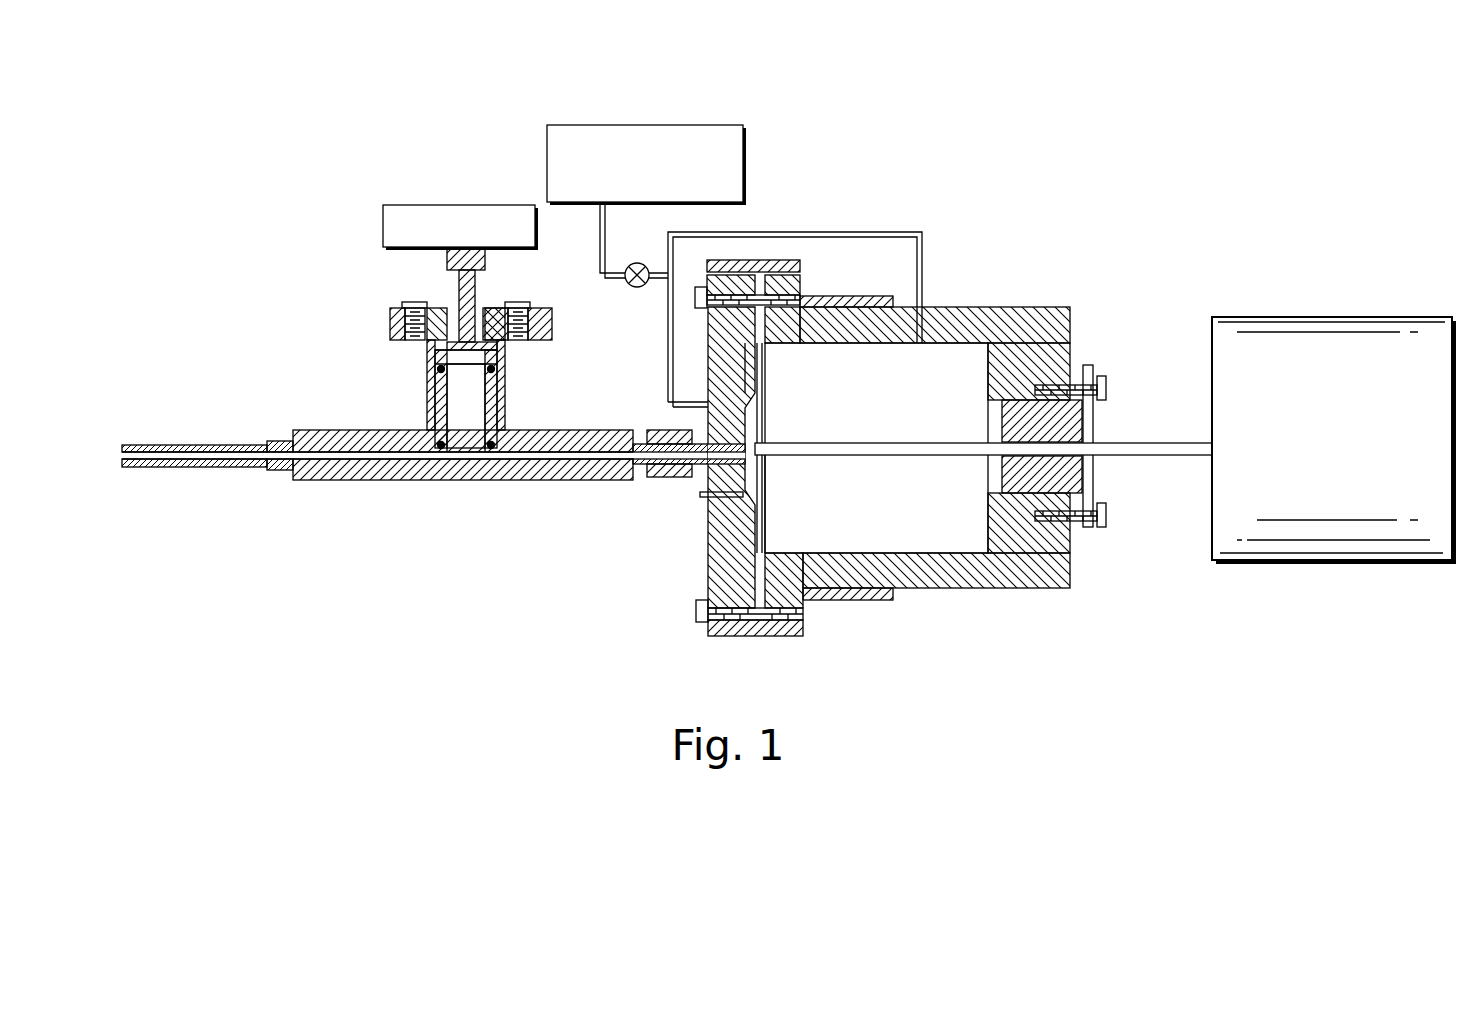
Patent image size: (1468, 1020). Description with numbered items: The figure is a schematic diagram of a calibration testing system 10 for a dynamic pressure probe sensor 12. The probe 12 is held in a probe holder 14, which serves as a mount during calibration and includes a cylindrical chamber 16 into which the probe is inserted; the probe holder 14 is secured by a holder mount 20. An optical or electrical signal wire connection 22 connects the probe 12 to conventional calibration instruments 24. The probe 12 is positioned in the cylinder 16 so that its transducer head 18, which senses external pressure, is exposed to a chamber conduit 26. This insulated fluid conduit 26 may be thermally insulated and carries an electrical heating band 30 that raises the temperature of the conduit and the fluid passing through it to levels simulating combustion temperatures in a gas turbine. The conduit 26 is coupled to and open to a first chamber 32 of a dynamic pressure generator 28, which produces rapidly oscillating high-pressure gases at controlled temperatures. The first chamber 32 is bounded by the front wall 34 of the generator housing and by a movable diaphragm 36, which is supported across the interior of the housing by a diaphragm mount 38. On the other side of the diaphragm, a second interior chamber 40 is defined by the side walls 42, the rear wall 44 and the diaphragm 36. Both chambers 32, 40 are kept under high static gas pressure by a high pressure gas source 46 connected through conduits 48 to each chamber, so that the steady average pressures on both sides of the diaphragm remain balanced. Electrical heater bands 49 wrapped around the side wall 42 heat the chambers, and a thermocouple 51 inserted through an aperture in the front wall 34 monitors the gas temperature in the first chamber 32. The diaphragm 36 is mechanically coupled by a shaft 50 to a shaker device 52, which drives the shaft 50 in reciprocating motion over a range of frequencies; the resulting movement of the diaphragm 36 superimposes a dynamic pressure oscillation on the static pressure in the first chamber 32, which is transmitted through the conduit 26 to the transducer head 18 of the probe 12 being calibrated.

The calibration testing system 10 is at (868, 172).
The dynamic pressure probe sensor 12 is at (468, 403).
The probe holder 14 is at (506, 373).
The cylindrical chamber 16 is at (491, 404).
The transducer head 18 is at (468, 452).
The holder mount 20 is at (390, 317).
The signal wire connection 22 is at (485, 265).
The calibration instruments 24 is at (408, 207).
The chamber conduit 26 is at (541, 481).
The dynamic pressure generator 28 is at (955, 589).
The electrical heating band 30 is at (649, 429).
The first chamber 32 is at (753, 406).
The front wall 34 is at (752, 371).
The movable diaphragm 36 is at (765, 473).
The diaphragm mount 38 is at (785, 594).
The second interior chamber 40 is at (911, 388).
The side walls 42 is at (978, 322).
The rear wall 44 is at (1050, 360).
The high pressure gas source 46 is at (722, 173).
The conduits 48 is at (774, 233).
The electrical heater bands 49 is at (836, 298).
The shaft 50 is at (1120, 455).
The thermocouple 51 is at (700, 495).
The shaker device 52 is at (1283, 560).